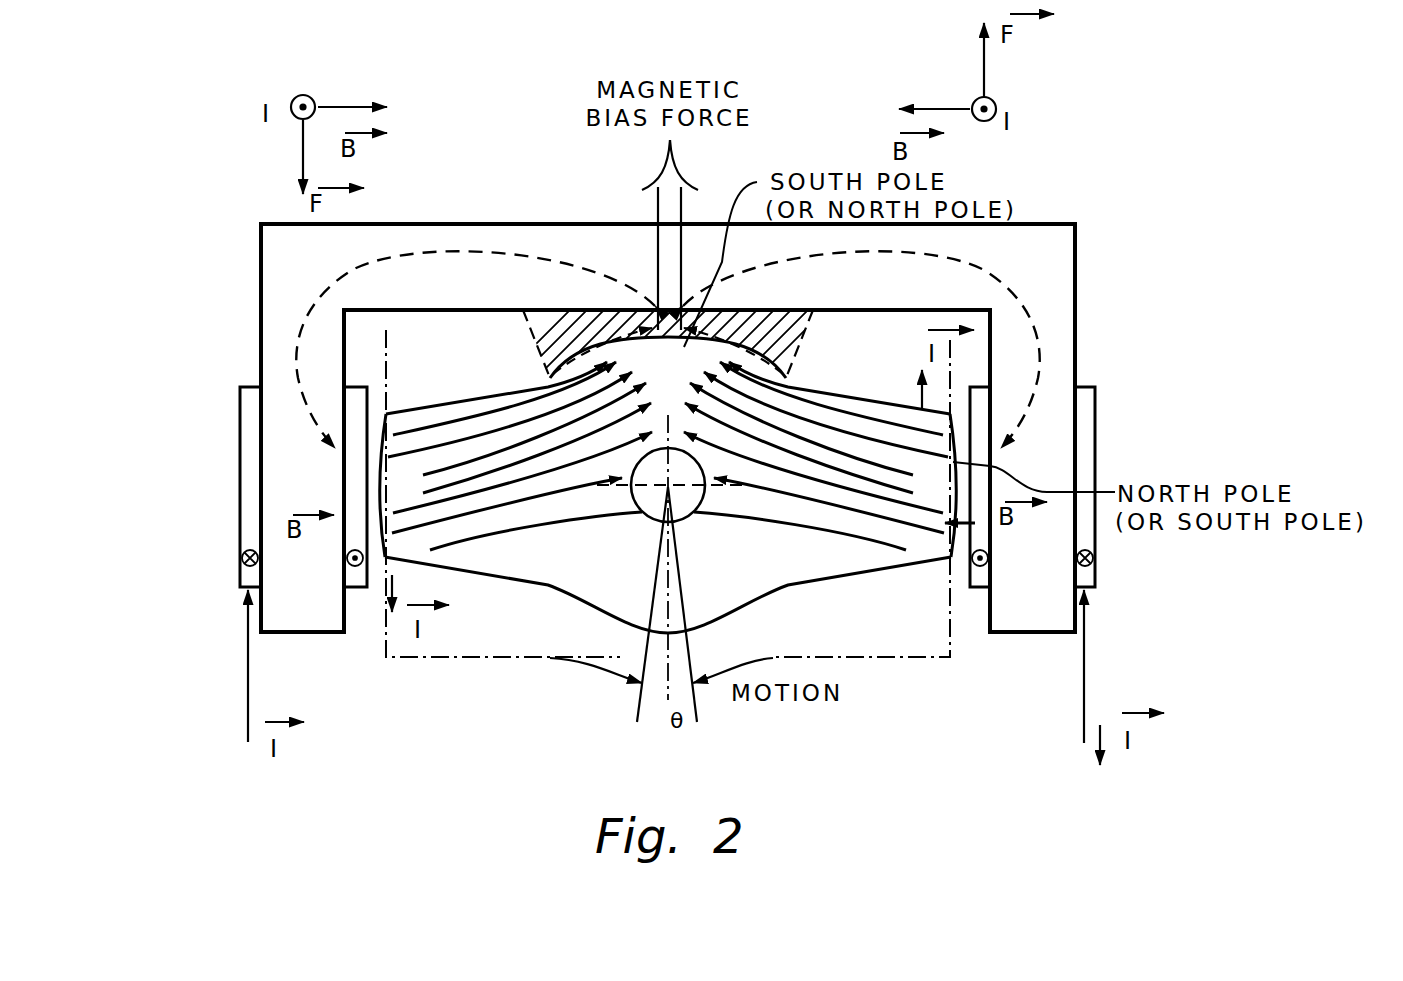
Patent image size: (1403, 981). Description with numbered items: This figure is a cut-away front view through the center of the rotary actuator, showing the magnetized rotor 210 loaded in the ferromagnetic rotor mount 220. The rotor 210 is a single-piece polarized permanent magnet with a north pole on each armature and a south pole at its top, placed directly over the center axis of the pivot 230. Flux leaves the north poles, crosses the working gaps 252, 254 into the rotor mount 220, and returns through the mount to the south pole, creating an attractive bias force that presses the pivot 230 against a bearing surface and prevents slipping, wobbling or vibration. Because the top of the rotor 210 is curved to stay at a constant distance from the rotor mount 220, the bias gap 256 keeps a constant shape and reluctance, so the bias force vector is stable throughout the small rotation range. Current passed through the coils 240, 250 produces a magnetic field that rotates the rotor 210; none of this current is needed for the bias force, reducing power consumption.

The magnetized rotor 210 is at (757, 611).
The ferromagnetic rotor mount 220 is at (1083, 327).
The pivot 230 is at (639, 513).
The coil 240 is at (237, 580).
The coil 250 is at (1097, 575).
The working gap 252 is at (373, 530).
The working gap 254 is at (962, 548).
The bias gap 256 is at (613, 320).